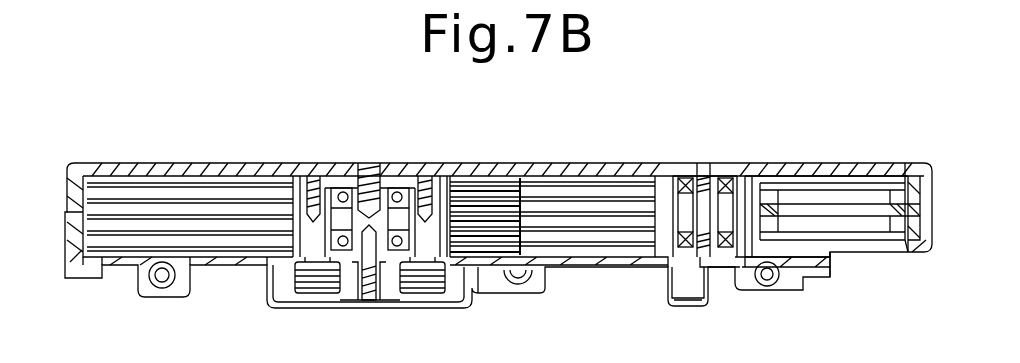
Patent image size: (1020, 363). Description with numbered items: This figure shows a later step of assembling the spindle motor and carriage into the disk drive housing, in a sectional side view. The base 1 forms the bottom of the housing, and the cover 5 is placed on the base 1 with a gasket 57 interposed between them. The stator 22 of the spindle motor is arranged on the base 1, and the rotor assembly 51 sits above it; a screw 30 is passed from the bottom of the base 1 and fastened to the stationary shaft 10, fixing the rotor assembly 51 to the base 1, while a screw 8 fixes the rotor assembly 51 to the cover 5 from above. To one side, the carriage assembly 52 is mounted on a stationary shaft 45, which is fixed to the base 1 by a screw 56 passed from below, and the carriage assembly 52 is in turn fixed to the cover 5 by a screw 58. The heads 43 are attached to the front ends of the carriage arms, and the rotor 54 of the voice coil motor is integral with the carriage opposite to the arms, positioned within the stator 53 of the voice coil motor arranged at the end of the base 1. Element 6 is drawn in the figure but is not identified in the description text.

The base 1 is at (577, 272).
The cover 5 is at (600, 158).
The first heat sink fins 6 is at (195, 198).
The screw 8 is at (366, 163).
The stationary shaft 10 is at (350, 303).
The stator 22 is at (322, 290).
The screw 30 is at (372, 306).
The heads 43 is at (487, 272).
The stationary shaft 45 is at (720, 265).
The rotor assembly 51 is at (457, 147).
The carriage assembly 52 is at (675, 153).
The stator 53 is at (857, 190).
The rotor 54 is at (815, 202).
The screw 56 is at (703, 267).
The gasket 57 is at (938, 250).
The screw 58 is at (712, 162).